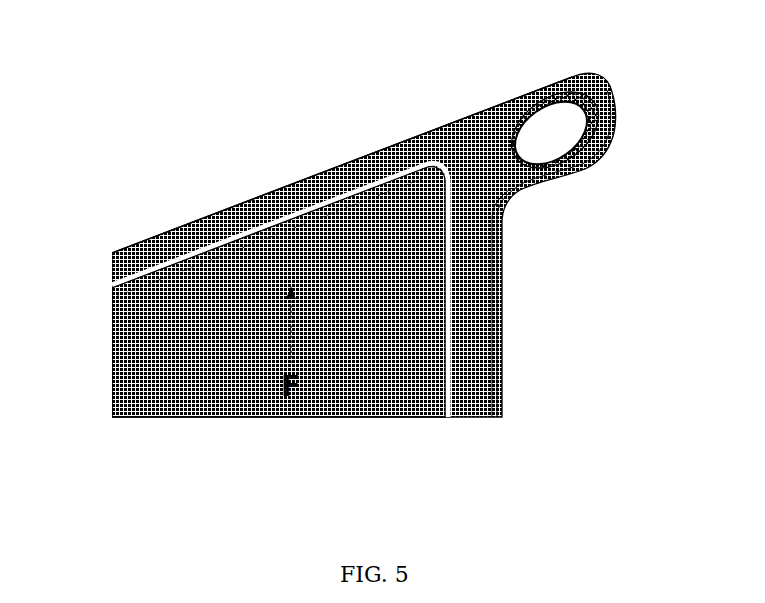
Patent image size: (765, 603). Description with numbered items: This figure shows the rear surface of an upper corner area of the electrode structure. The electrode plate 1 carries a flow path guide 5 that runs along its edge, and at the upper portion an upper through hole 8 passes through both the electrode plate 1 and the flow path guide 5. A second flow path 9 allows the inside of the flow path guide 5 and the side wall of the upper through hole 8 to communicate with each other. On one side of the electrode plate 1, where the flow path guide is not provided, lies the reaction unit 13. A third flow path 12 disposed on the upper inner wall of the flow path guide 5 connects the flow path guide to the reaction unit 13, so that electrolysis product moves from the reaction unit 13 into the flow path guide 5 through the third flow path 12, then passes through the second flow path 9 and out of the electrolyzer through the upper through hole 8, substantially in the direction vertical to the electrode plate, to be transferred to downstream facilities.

The electrode plate 1 is at (502, 333).
The flow path guide 5 is at (203, 216).
The upper through hole 8 is at (565, 133).
The second flow path 9 is at (517, 100).
The third flow path 12 is at (385, 148).
The reaction unit 13 is at (233, 405).